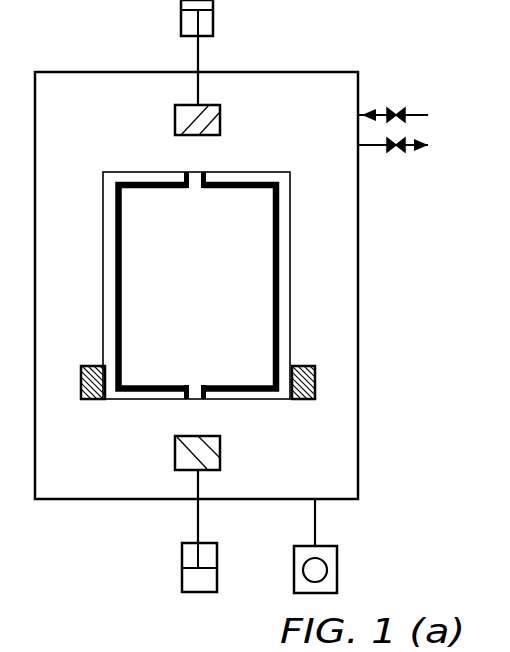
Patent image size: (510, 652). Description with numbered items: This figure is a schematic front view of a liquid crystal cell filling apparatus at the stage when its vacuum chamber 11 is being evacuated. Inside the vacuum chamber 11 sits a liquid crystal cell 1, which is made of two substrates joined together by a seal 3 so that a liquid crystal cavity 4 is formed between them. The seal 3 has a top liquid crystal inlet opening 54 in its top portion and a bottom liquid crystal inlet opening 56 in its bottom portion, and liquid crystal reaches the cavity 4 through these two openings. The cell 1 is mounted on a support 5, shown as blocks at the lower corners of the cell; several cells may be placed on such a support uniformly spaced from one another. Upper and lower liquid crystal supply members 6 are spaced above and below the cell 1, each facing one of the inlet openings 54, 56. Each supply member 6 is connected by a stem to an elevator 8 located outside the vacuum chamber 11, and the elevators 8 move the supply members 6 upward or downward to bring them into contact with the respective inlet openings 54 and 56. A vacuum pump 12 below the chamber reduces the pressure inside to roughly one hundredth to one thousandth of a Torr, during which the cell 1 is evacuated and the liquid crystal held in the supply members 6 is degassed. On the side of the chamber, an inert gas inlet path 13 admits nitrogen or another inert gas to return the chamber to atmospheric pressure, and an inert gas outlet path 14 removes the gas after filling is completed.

The liquid crystal cell 1 is at (243, 277).
The seal 3 is at (289, 213).
The liquid crystal cavity 4 is at (233, 364).
The support 5 is at (316, 393).
The upper liquid crystal supply member 6 is at (224, 110).
The elevator 8 is at (220, 52).
The vacuum chamber 11 is at (359, 468).
The vacuum pump 12 is at (338, 566).
The inert gas inlet path 13 is at (420, 114).
The inert gas outlet path 14 is at (420, 148).
The top liquid crystal inlet opening 54 is at (197, 188).
The bottom liquid crystal inlet opening 56 is at (200, 401).